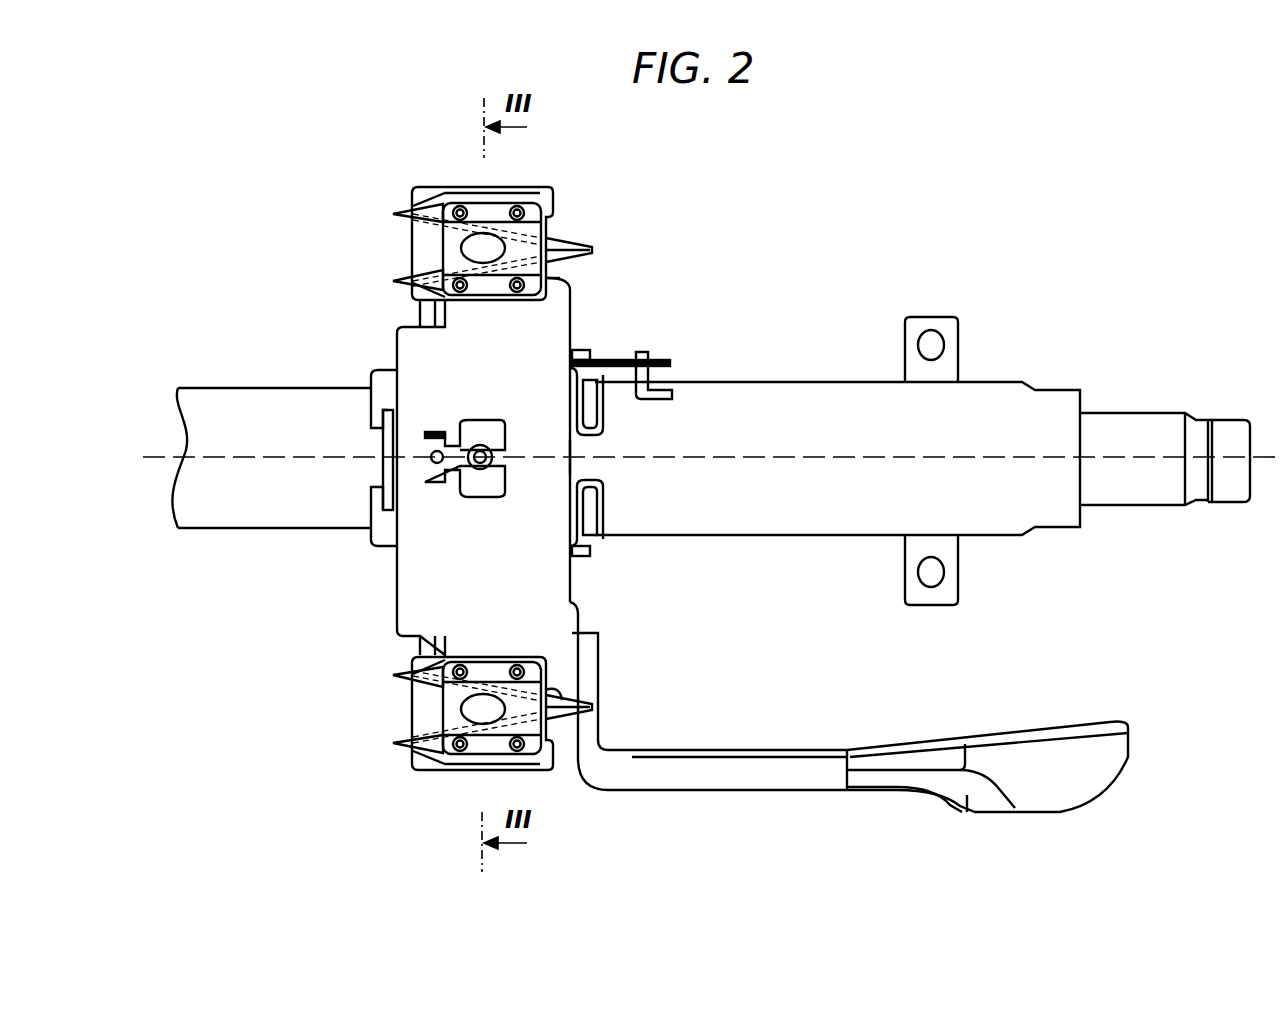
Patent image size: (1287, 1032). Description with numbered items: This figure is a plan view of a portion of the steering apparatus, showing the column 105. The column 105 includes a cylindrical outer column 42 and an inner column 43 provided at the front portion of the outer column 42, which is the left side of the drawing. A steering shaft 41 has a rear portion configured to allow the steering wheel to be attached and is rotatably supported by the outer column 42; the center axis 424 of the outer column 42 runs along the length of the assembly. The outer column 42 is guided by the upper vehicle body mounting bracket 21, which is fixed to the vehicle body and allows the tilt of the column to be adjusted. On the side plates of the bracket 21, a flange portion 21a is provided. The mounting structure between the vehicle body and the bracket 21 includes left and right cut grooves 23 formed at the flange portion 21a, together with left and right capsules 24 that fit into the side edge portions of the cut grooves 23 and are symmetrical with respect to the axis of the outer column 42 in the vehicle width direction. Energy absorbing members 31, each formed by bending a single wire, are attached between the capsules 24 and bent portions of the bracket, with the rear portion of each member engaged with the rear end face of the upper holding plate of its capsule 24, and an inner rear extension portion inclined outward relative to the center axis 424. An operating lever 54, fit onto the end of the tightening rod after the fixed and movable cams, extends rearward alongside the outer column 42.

The column 105 is at (801, 297).
The upper vehicle body mounting bracket 21 is at (371, 325).
The flange portion 21a is at (566, 466).
The cut groove 23 is at (562, 278).
The capsule 24 is at (441, 183).
The energy absorbing member 31 is at (392, 208).
The steering shaft 41 is at (1157, 432).
The outer column 42 is at (810, 390).
The center axis 424 is at (893, 458).
The inner column 43 is at (260, 400).
The operating lever 54 is at (1040, 797).